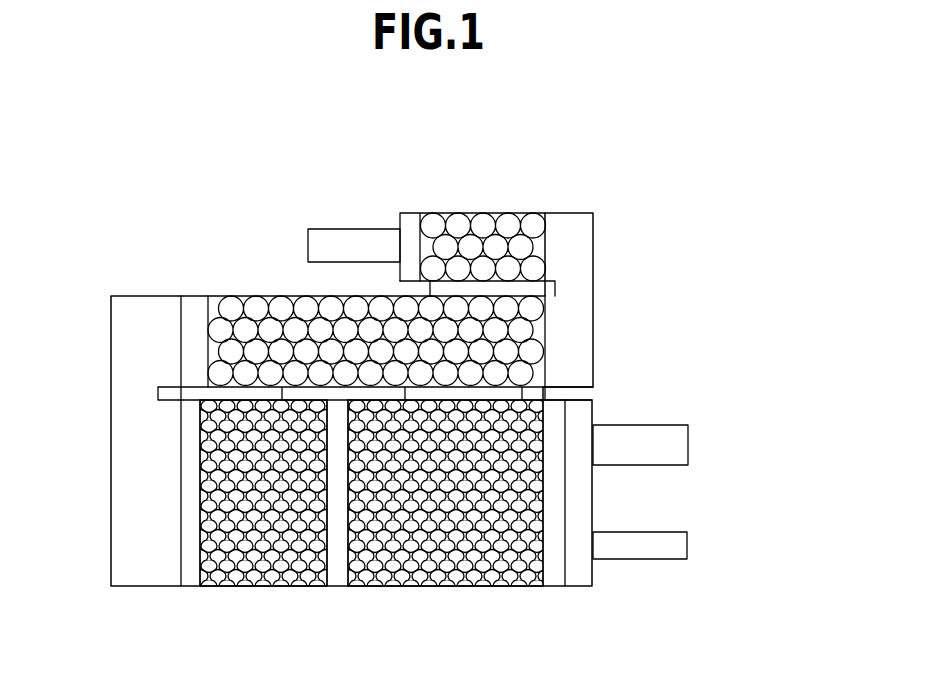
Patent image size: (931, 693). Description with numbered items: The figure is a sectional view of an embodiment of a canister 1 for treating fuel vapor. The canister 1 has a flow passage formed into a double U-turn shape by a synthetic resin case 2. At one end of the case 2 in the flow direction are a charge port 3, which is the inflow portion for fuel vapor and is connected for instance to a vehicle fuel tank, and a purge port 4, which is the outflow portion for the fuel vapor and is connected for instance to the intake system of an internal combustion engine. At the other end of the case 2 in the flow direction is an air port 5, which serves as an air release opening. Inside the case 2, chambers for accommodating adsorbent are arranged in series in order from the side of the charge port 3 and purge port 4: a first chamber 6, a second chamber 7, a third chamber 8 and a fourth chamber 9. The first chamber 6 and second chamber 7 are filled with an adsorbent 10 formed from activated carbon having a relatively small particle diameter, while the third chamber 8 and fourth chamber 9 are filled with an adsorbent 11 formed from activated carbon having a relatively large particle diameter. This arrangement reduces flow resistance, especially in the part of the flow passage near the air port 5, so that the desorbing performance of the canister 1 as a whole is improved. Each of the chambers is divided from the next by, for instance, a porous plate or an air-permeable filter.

The canister 1 is at (617, 278).
The case 2 is at (343, 297).
The charge port 3 is at (678, 447).
The purge port 4 is at (678, 548).
The air port 5 is at (377, 237).
The first chamber 6 is at (452, 580).
The second chamber 7 is at (255, 580).
The third chamber 8 is at (291, 304).
The fourth chamber 9 is at (455, 220).
The adsorbent 10 is at (225, 558).
The adsorbent 11 is at (533, 223).